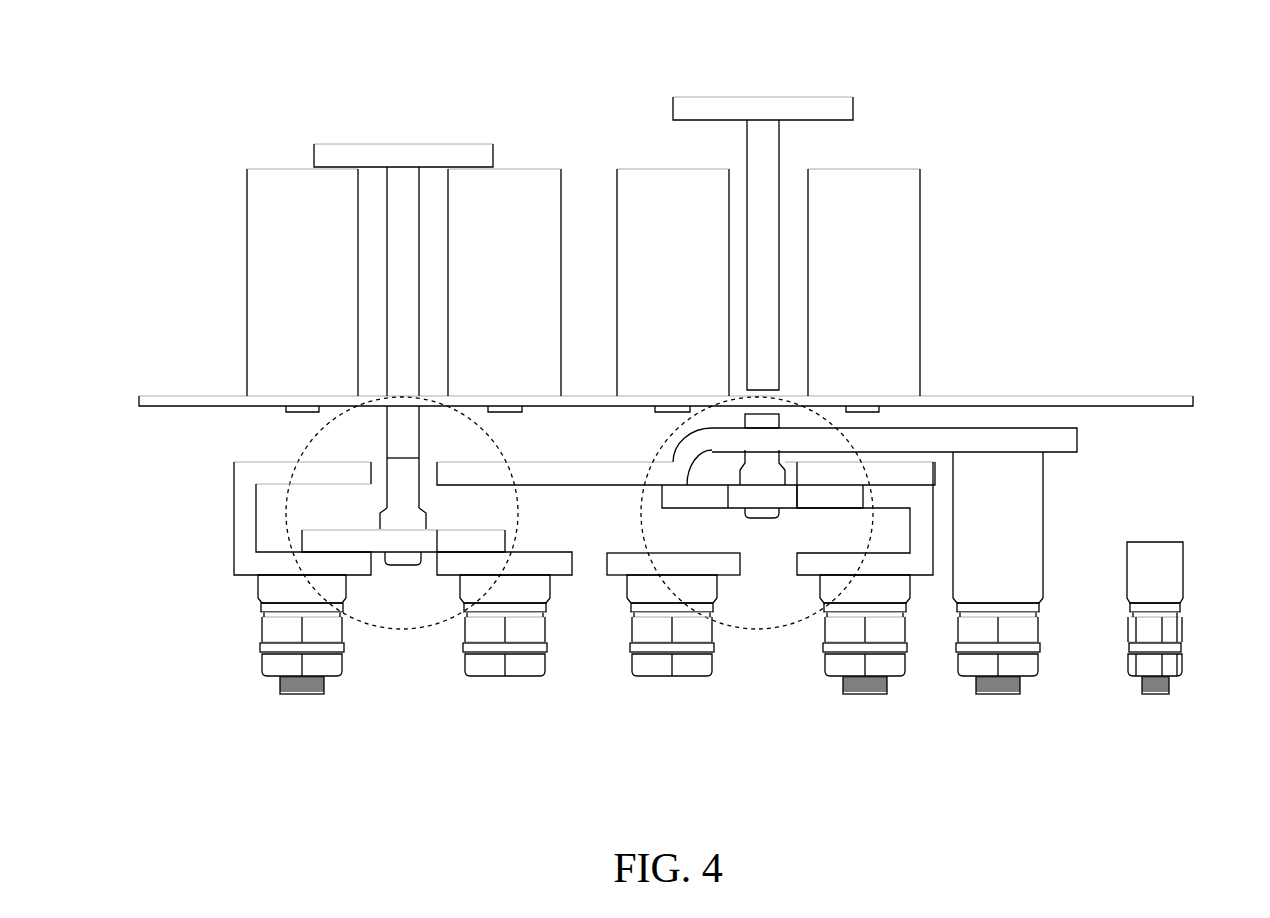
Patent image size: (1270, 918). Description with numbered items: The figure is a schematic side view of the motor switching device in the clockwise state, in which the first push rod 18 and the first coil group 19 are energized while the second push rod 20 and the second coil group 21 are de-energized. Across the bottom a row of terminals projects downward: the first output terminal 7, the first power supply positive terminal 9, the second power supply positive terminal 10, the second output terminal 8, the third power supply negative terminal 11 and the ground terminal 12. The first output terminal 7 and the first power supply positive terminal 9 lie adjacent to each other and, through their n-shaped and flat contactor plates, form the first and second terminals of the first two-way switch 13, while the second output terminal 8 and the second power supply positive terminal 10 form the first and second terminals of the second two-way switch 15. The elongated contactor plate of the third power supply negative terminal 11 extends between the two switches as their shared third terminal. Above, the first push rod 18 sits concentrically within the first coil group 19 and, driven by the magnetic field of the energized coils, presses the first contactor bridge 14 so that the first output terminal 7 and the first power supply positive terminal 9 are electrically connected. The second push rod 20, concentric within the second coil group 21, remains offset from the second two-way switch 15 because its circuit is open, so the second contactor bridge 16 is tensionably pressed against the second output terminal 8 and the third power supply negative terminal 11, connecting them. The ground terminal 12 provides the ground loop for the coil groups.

The first output terminal 7 is at (298, 694).
The second output terminal 8 is at (857, 694).
The first power supply positive terminal 9 is at (487, 675).
The second power supply positive terminal 10 is at (655, 675).
The third power supply negative terminal 11 is at (992, 694).
The ground terminal 12 is at (1150, 694).
The first two-way switch 13 is at (393, 625).
The first contactor bridge 14 is at (390, 490).
The second two-way switch 15 is at (757, 628).
The second contactor bridge 16 is at (757, 518).
The first push rod 18 is at (394, 150).
The first coil group 19 is at (254, 279).
The second push rod 20 is at (777, 100).
The second coil group 21 is at (642, 175).